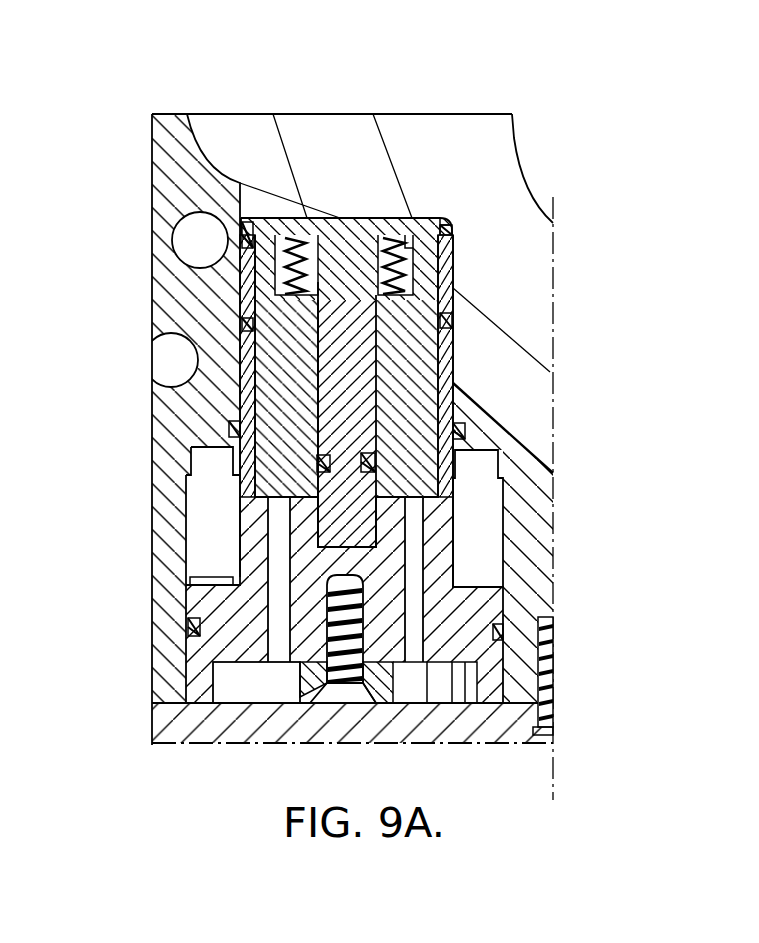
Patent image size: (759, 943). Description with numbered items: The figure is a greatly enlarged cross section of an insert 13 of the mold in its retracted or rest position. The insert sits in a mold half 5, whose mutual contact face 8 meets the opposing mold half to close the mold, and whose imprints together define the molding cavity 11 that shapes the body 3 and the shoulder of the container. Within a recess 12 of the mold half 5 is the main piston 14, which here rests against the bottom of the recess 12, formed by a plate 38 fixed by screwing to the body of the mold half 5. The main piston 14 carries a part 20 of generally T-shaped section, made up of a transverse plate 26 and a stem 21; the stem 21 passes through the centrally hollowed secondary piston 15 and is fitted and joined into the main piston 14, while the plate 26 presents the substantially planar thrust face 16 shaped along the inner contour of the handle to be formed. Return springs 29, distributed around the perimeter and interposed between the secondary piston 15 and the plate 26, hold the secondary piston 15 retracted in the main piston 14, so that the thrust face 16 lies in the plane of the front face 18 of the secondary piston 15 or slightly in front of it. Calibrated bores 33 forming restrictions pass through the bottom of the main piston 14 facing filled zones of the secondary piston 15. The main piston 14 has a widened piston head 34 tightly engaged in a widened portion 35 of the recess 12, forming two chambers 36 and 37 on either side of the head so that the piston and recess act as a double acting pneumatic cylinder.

The body 3 is at (532, 452).
The mold half 5 is at (520, 555).
The mutual contact face 8 is at (488, 114).
The molding cavity 11 is at (503, 227).
The recess 12 is at (240, 400).
The insert 13 is at (462, 343).
The main piston 14 is at (250, 552).
The secondary piston 15 is at (397, 381).
The thrust face 16 is at (339, 218).
The front face 18 is at (442, 218).
The part 20 is at (312, 370).
The stem 21 is at (348, 336).
The transverse plate 26 is at (422, 230).
The return springs 29 is at (408, 267).
The bores 33 is at (277, 605).
The piston head 34 is at (232, 654).
The widened portion 35 is at (200, 508).
The chamber 36 is at (248, 680).
The chamber 37 is at (473, 507).
The plate 38 is at (472, 722).